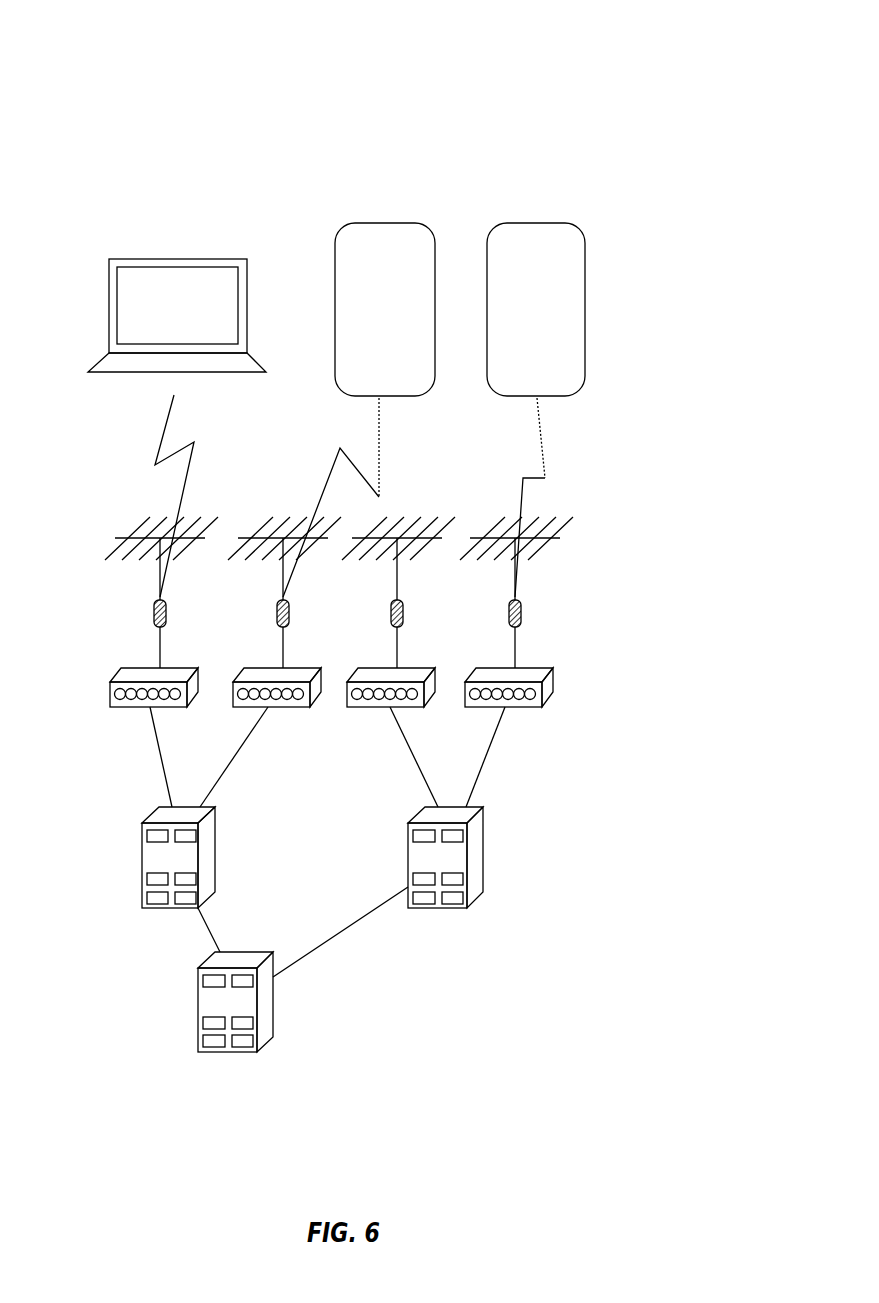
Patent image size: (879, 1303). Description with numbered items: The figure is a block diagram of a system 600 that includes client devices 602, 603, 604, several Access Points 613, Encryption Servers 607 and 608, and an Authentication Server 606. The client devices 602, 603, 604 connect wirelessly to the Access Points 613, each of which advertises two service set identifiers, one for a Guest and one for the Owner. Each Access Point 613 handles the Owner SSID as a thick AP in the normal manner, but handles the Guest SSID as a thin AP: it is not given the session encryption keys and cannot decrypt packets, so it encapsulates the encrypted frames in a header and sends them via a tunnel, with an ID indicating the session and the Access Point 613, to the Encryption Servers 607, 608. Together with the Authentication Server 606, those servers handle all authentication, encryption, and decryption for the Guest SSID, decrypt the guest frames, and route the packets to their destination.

The system 600 is at (570, 34).
The client device 602 is at (109, 300).
The client device 603 is at (385, 223).
The client device 604 is at (585, 258).
The authentication server 606 is at (185, 988).
The encryption server 607 is at (142, 850).
The encryption server 608 is at (483, 855).
The access point 613 is at (112, 682).